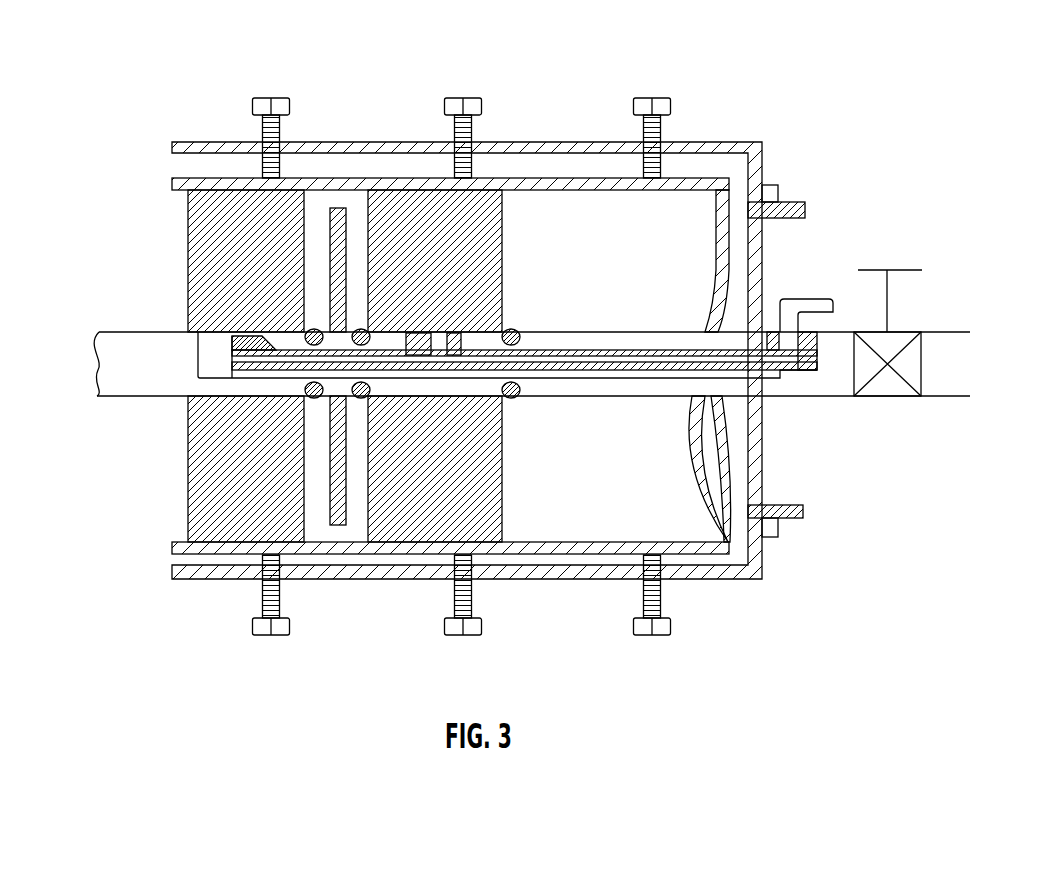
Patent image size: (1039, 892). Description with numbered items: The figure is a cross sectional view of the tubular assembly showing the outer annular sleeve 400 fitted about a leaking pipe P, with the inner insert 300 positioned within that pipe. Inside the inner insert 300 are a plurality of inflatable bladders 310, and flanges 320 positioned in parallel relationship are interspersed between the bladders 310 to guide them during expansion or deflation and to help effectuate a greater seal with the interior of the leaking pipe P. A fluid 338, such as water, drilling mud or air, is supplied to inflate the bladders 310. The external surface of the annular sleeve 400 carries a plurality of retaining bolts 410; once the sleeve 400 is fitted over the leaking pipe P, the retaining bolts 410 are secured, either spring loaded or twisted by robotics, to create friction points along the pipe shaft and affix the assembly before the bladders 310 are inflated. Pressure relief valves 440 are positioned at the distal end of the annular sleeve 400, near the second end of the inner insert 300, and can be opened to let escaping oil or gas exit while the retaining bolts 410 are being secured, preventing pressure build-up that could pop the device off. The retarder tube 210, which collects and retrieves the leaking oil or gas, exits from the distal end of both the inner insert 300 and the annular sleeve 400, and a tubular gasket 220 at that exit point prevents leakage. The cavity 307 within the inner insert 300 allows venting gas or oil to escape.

The annular sleeve 400 is at (228, 142).
The retaining bolts 410 is at (265, 98).
The flanges 320 is at (338, 208).
The leaking pipe P is at (352, 180).
The inflatable bladders 310 is at (210, 230).
The pressure relief valves 440 is at (778, 200).
The fluid 338 is at (833, 306).
The tubular gasket 220 is at (768, 397).
The retarder tube 210 is at (880, 396).
The inner insert 300 is at (594, 406).
The cavity 307 is at (536, 513).